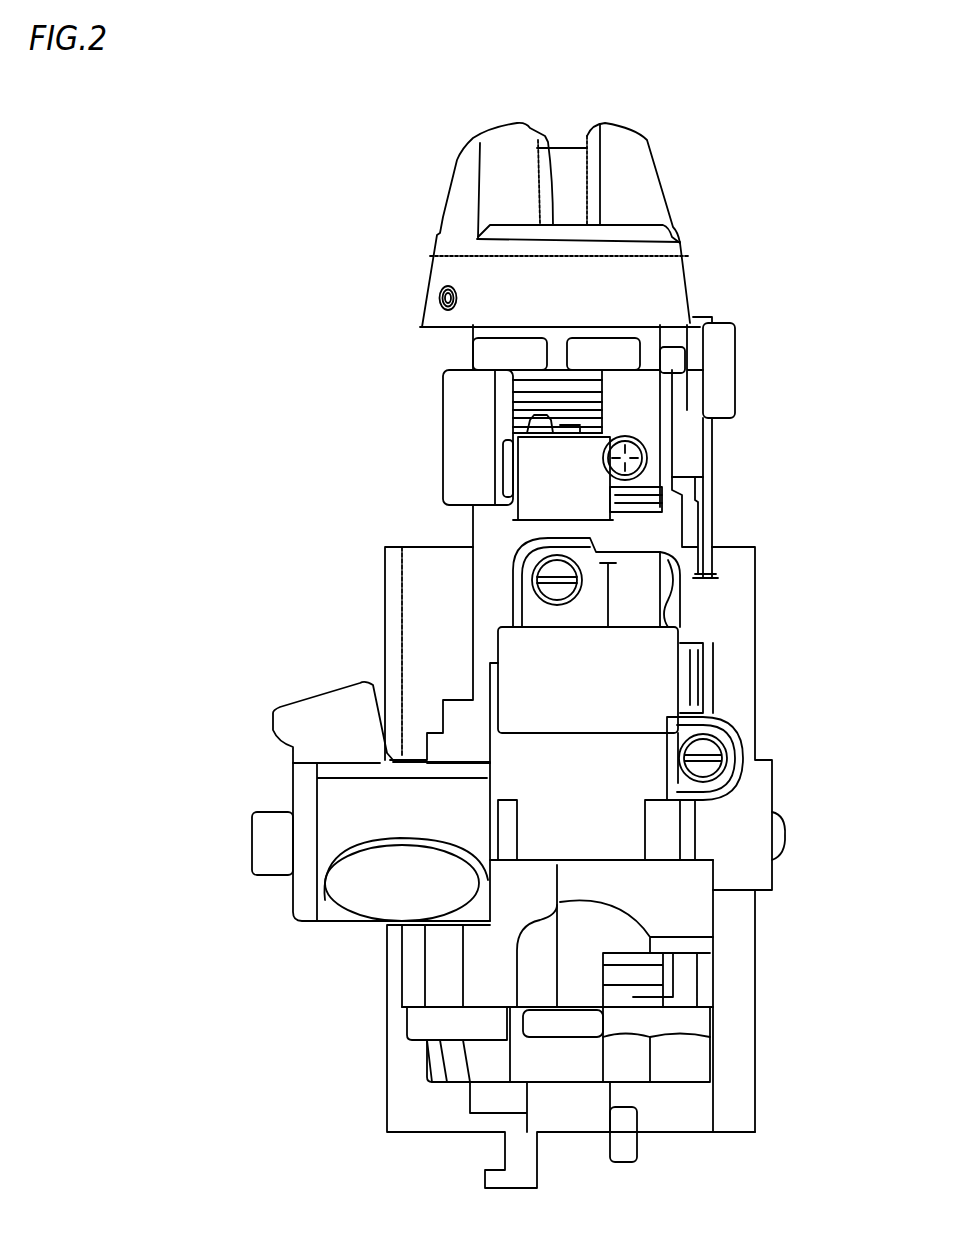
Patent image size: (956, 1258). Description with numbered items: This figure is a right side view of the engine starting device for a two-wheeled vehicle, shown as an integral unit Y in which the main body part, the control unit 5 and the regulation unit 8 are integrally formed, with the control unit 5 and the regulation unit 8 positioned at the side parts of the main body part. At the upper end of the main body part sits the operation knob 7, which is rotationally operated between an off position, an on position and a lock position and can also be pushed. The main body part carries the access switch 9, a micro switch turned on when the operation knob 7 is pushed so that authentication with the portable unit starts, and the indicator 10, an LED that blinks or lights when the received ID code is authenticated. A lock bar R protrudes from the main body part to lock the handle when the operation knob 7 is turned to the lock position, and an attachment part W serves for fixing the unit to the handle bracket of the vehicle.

The integral unit Y is at (724, 189).
The operation knob 7 is at (441, 275).
The indicator 10 is at (716, 354).
The access switch 9 is at (516, 430).
The control unit 5 is at (392, 575).
The regulation unit 8 is at (506, 653).
The lock bar R is at (263, 843).
The attachment part W is at (353, 920).